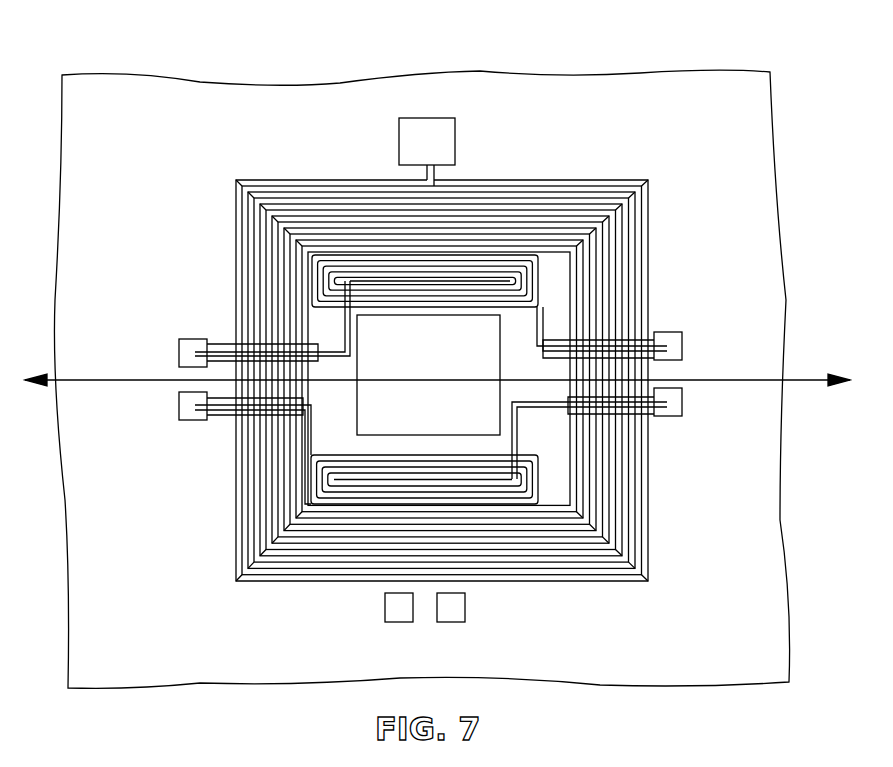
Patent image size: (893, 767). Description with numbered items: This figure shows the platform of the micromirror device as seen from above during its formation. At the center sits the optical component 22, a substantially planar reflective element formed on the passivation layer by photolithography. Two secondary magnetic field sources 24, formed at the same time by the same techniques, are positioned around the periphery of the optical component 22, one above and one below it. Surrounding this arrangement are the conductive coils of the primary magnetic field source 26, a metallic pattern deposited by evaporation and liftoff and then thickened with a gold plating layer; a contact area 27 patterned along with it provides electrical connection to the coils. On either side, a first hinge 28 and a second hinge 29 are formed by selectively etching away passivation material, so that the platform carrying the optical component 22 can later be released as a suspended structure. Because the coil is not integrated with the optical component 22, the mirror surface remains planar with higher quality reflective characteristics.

The optical component 22 is at (443, 368).
The secondary magnetic field source 24 is at (568, 470).
The primary magnetic field source 26 is at (632, 258).
The contact area 27 is at (427, 118).
The first hinge 28 is at (205, 421).
The second hinge 29 is at (648, 360).